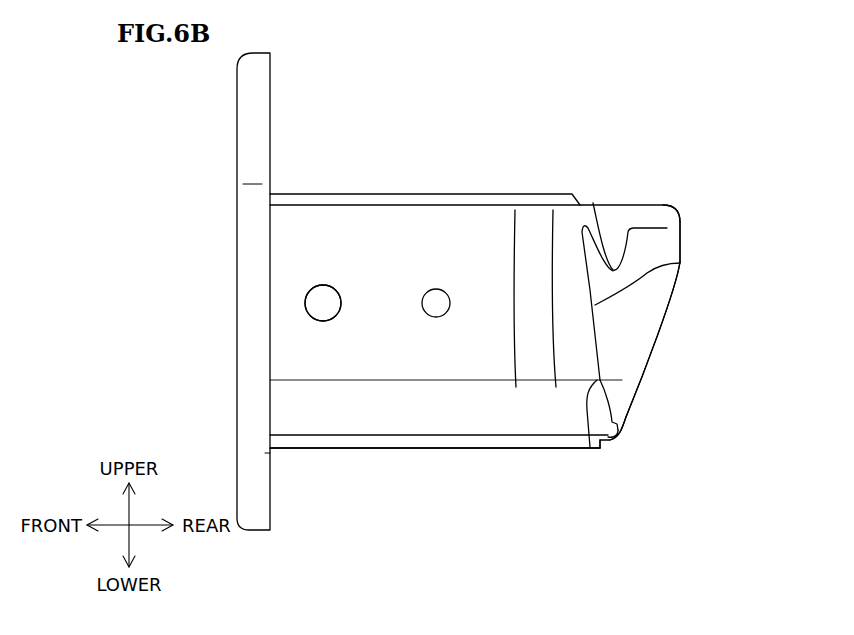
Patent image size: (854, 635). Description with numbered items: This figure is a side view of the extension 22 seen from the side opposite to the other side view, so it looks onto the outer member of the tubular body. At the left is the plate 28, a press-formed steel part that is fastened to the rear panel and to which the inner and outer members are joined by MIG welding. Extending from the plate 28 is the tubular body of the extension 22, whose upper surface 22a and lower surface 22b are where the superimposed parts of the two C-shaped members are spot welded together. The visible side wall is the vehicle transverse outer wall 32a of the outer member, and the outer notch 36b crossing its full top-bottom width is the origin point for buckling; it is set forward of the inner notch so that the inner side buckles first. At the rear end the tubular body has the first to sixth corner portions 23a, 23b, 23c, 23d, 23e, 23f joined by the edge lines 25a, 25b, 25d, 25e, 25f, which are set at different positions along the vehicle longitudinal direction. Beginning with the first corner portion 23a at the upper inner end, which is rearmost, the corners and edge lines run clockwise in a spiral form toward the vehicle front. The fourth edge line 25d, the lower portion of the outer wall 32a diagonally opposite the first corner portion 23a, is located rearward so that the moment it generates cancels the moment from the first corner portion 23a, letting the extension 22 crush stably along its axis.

The extension 22 is at (698, 180).
The upper surface 22a is at (376, 205).
The lower surface 22b is at (408, 437).
The first corner portion 23a is at (680, 210).
The second corner portion 23b is at (636, 378).
The third corner portion 23c is at (620, 433).
The fourth corner portion 23d is at (602, 425).
The fifth corner portion 23e is at (588, 440).
The sixth corner portion 23f is at (585, 210).
The first edge line 25a is at (662, 307).
The second edge line 25b is at (626, 415).
The fourth edge line 25d is at (615, 400).
The fifth edge line 25e is at (680, 263).
The sixth edge line 25f is at (637, 203).
The plate 28 is at (225, 210).
The vehicle transverse outer wall 32a is at (373, 332).
The outer notch 36b is at (535, 293).